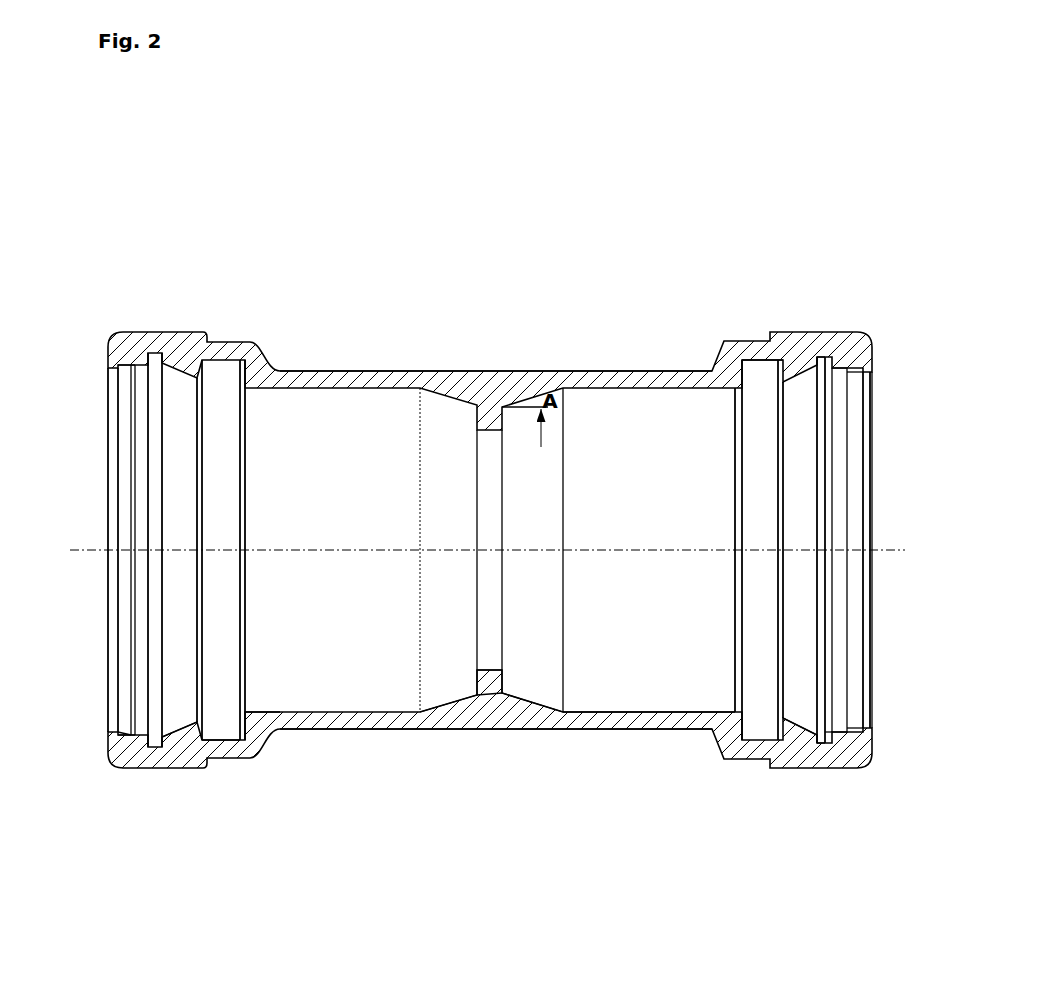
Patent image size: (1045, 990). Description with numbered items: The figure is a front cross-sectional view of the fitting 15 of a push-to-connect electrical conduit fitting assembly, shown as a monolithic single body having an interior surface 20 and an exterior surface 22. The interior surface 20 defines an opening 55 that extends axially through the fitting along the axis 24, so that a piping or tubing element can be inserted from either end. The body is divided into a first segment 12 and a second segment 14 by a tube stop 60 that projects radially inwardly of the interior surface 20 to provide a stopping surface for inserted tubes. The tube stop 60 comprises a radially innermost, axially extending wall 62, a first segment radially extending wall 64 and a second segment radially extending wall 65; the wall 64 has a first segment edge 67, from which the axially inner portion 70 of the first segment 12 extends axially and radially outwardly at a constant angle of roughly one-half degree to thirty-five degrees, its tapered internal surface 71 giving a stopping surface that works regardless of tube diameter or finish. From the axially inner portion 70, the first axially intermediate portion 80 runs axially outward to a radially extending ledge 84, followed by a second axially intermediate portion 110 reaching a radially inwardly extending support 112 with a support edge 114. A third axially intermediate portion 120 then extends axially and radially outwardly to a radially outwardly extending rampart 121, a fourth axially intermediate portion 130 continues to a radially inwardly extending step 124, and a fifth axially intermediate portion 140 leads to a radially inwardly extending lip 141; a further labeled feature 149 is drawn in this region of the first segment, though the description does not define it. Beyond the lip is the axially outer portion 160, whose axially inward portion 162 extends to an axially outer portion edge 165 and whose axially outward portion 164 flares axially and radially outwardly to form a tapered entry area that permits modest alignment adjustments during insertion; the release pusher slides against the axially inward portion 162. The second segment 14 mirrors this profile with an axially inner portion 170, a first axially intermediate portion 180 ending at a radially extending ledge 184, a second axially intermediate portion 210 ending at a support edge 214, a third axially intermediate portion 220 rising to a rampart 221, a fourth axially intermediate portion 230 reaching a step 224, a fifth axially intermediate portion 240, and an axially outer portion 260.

The first segment 12 is at (690, 326).
The second segment 14 is at (307, 356).
The fitting 15 is at (738, 271).
The interior surface 20 is at (365, 711).
The exterior surface 22 is at (622, 368).
The axis 24 is at (318, 550).
The opening 55 is at (80, 550).
The tube stop 60 is at (488, 418).
The radially innermost and axially extending wall 62 is at (486, 662).
The first segment radially extending wall 64 is at (499, 683).
The second segment radially extending wall 65 is at (478, 682).
The first segment edge 67 is at (500, 697).
The axially inner portion 70 is at (523, 660).
The tapered internal surface 71 is at (534, 697).
The first axially intermediate portion 80 is at (603, 656).
The radially extending ledge 84 is at (739, 371).
The second axially intermediate portion 110 is at (753, 717).
The radially inwardly extending support 112 is at (785, 369).
The support edge 114 is at (790, 633).
The third axially intermediate portion 120 is at (820, 727).
The radially outwardly extending rampart 121 is at (821, 726).
The radially inwardly extending step 124 is at (834, 360).
The fourth axially intermediate portion 130 is at (824, 746).
The fifth axially intermediate portion 140 is at (842, 735).
The radially inwardly extending lip 141 is at (852, 724).
The inner sleeve 149 is at (851, 367).
The axially outer portion 160 is at (869, 398).
The axially inward portion 162 is at (856, 461).
The axially outward portion 164 is at (870, 504).
The axially outer portion edge 165 is at (866, 722).
The axially inner portion 170 is at (447, 405).
The first axially intermediate portion 180 is at (363, 395).
The radially extending ledge 184 is at (247, 716).
The second axially intermediate portion 210 is at (222, 376).
The support edge 214 is at (201, 722).
The third axially intermediate portion 220 is at (178, 390).
The radially outwardly extending rampart 221 is at (167, 731).
The radially inwardly extending step 224 is at (146, 738).
The fourth axially intermediate portion 230 is at (155, 358).
The fifth axially intermediate portion 240 is at (140, 383).
The axially outer portion 260 is at (122, 378).